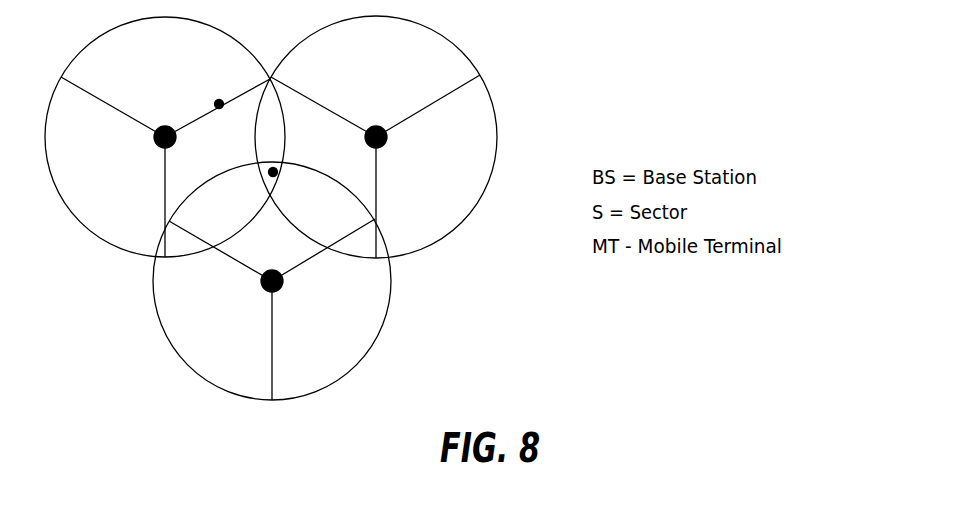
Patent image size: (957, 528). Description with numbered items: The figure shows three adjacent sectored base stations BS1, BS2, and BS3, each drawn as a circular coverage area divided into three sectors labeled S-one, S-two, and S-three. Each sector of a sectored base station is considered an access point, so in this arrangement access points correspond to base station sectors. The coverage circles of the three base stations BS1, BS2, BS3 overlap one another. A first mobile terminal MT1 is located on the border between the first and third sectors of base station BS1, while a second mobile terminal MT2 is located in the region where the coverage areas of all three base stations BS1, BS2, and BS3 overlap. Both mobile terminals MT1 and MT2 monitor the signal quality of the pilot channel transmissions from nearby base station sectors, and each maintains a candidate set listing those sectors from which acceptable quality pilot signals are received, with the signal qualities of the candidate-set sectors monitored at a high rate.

The base station BS1 is at (165, 137).
The base station BS2 is at (376, 137).
The base station BS3 is at (272, 281).
The first mobile terminal MT1 is at (219, 104).
The second mobile terminal MT2 is at (273, 172).